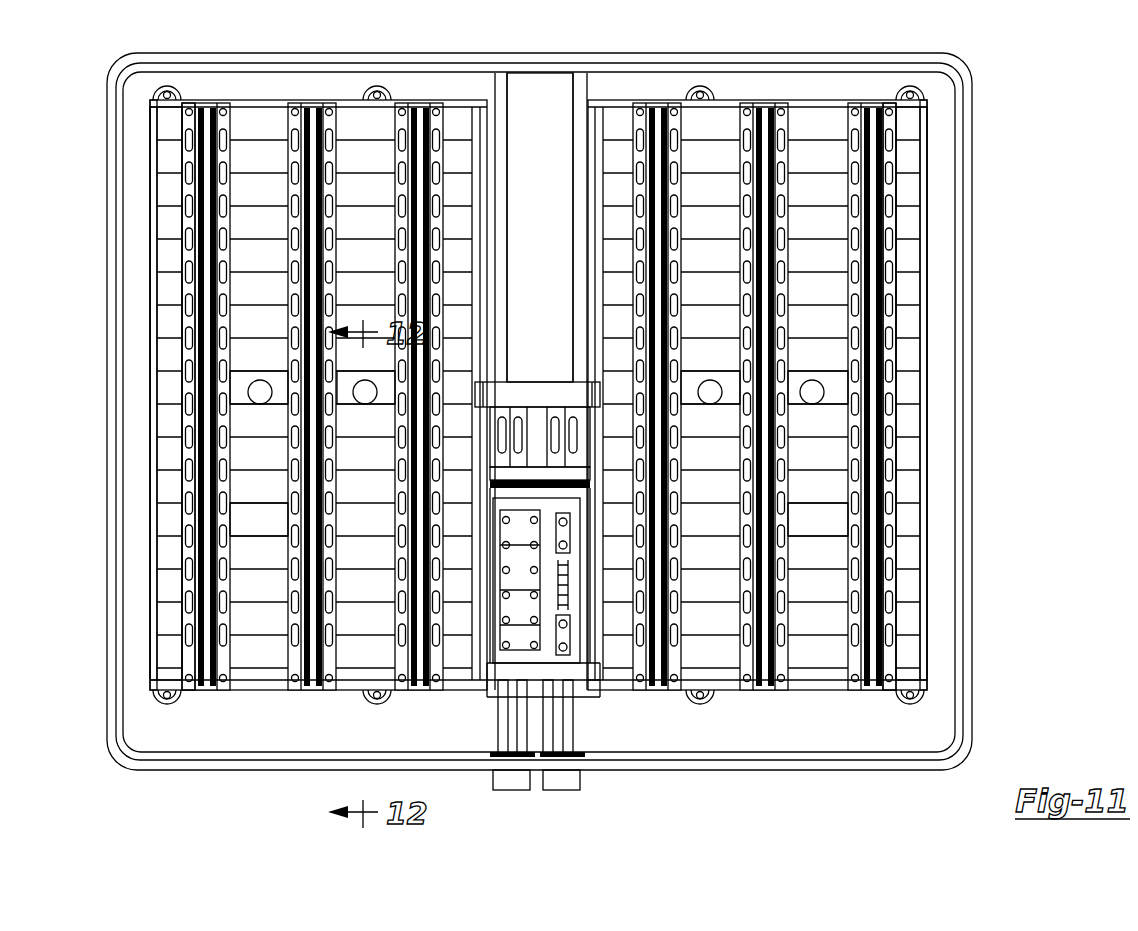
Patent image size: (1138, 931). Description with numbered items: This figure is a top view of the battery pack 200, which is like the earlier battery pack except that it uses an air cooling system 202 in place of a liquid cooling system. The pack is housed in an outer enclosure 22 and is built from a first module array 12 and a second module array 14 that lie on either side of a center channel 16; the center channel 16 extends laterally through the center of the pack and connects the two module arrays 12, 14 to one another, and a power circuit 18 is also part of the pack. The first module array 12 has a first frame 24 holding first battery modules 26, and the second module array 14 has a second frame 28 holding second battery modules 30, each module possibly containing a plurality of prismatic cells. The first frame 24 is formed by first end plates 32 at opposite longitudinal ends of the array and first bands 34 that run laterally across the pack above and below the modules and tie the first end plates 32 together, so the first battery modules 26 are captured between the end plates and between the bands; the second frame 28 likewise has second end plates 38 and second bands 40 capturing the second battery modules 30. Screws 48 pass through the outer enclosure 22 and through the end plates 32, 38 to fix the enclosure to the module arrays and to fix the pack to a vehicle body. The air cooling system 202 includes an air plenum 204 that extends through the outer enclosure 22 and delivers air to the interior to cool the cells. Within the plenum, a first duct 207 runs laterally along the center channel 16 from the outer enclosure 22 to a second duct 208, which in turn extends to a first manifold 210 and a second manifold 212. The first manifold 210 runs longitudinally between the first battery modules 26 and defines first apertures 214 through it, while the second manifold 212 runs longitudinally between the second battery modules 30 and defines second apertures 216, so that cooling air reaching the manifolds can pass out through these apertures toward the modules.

The battery pack 200 is at (1025, 97).
The outer enclosure 22 is at (866, 775).
The first module array 12 is at (275, 100).
The second module array 14 is at (805, 100).
The first frame 24 is at (335, 100).
The second frame 28 is at (748, 100).
The first end plates 32 is at (243, 103).
The second end plates 38 is at (835, 103).
The first battery modules 26 is at (157, 160).
The second battery modules 30 is at (918, 165).
The first bands 34 is at (192, 223).
The second bands 40 is at (890, 228).
The first manifold 210 is at (150, 388).
The second manifold 212 is at (918, 388).
The first apertures 214 is at (262, 386).
The second apertures 216 is at (710, 398).
The screws 48 is at (697, 703).
The air cooling system 202 is at (518, 48).
The air plenum 204 is at (573, 73).
The first duct 207 is at (525, 192).
The second duct 208 is at (525, 402).
The center channel 16 is at (592, 688).
The power circuit 18 is at (532, 795).